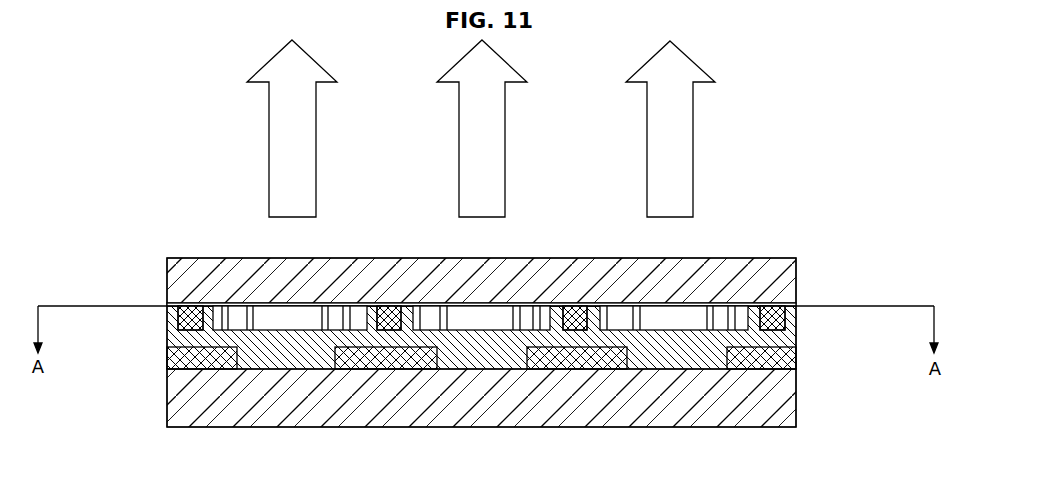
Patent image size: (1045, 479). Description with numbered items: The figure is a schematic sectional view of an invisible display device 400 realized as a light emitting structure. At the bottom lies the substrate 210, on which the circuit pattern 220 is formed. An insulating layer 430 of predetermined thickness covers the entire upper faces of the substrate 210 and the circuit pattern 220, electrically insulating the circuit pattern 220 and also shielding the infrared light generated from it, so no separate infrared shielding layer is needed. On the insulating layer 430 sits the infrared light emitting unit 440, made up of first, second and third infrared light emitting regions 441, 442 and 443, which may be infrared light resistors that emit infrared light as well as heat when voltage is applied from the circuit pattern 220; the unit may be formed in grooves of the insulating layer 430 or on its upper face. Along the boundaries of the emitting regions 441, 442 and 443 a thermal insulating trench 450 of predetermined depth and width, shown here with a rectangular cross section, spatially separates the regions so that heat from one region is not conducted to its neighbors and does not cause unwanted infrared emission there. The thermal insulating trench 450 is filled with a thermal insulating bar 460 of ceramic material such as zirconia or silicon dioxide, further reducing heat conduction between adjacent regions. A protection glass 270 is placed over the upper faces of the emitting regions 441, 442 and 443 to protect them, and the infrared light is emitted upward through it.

The invisible display device 400 is at (786, 190).
The protection glass 270 is at (773, 283).
The thermal insulating trench 450 is at (167, 306).
The insulating layer 430 is at (152, 335).
The circuit pattern 220 is at (796, 364).
The substrate 210 is at (760, 407).
The first infrared light emitting region 441 is at (262, 303).
The second infrared light emitting region 442 is at (448, 303).
The third infrared light emitting region 443 is at (698, 303).
The thermal insulating bar 460 is at (172, 304).
The infrared light emitting unit 440 is at (800, 322).